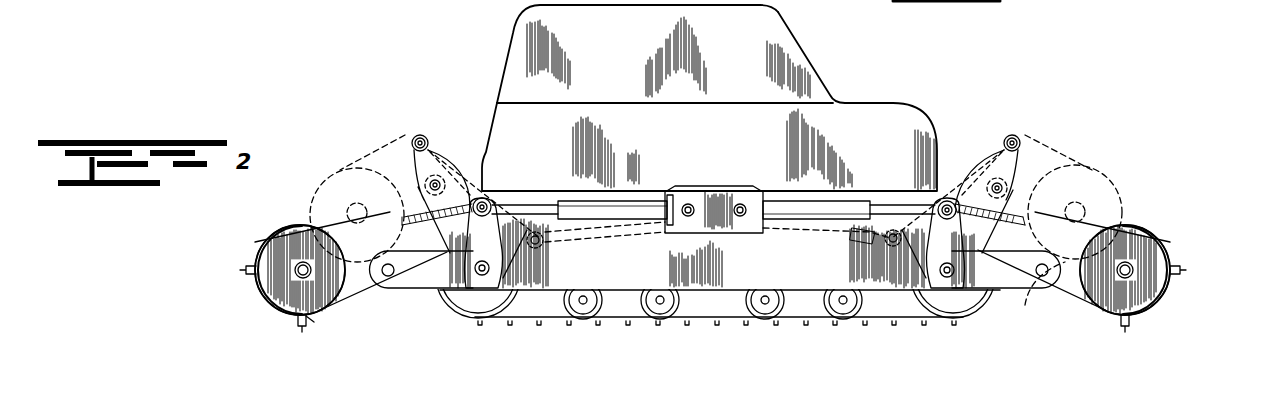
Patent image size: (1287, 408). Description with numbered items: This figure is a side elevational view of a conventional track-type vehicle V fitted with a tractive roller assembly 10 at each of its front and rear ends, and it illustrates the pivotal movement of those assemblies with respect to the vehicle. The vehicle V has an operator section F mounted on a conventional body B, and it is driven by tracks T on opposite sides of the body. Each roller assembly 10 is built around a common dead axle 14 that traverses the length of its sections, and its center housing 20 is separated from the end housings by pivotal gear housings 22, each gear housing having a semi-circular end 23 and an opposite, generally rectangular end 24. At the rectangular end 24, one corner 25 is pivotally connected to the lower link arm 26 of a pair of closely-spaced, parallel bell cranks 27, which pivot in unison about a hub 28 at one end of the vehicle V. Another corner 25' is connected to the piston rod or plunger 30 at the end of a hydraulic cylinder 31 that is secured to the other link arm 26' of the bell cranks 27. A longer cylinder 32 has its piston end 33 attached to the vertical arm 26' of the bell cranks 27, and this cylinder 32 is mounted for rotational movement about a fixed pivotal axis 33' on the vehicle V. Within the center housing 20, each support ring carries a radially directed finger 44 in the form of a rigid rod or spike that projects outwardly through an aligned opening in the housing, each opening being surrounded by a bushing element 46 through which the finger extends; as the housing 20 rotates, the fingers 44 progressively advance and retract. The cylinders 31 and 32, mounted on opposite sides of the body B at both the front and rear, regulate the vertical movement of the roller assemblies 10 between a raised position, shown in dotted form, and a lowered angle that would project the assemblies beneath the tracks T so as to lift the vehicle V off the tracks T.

The tractive roller assembly 10 is at (252, 245).
The dead axle 14 is at (298, 277).
The center housing 20 is at (1157, 232).
The pivotal gear housing 22 is at (262, 290).
The semi-circular end 23 is at (278, 238).
The rectangular end 24 is at (407, 245).
The corner 25 is at (1047, 296).
The corner 25' is at (716, 198).
The lower link arm 26 is at (694, 274).
The link arm 26' is at (728, 174).
The bell cranks 27 is at (397, 283).
The hub 28 is at (490, 292).
The piston rod or plunger 30 is at (428, 182).
The hydraulic cylinder 31 is at (428, 148).
The longer cylinder 32 is at (625, 203).
The piston end 33 is at (713, 204).
The rod coupling block 33' is at (714, 191).
The finger 44 is at (245, 270).
The bushing element 46 is at (312, 318).
The body B is at (484, 118).
The vehicle V is at (512, 47).
The operator section F is at (805, 40).
The tracks T is at (455, 318).